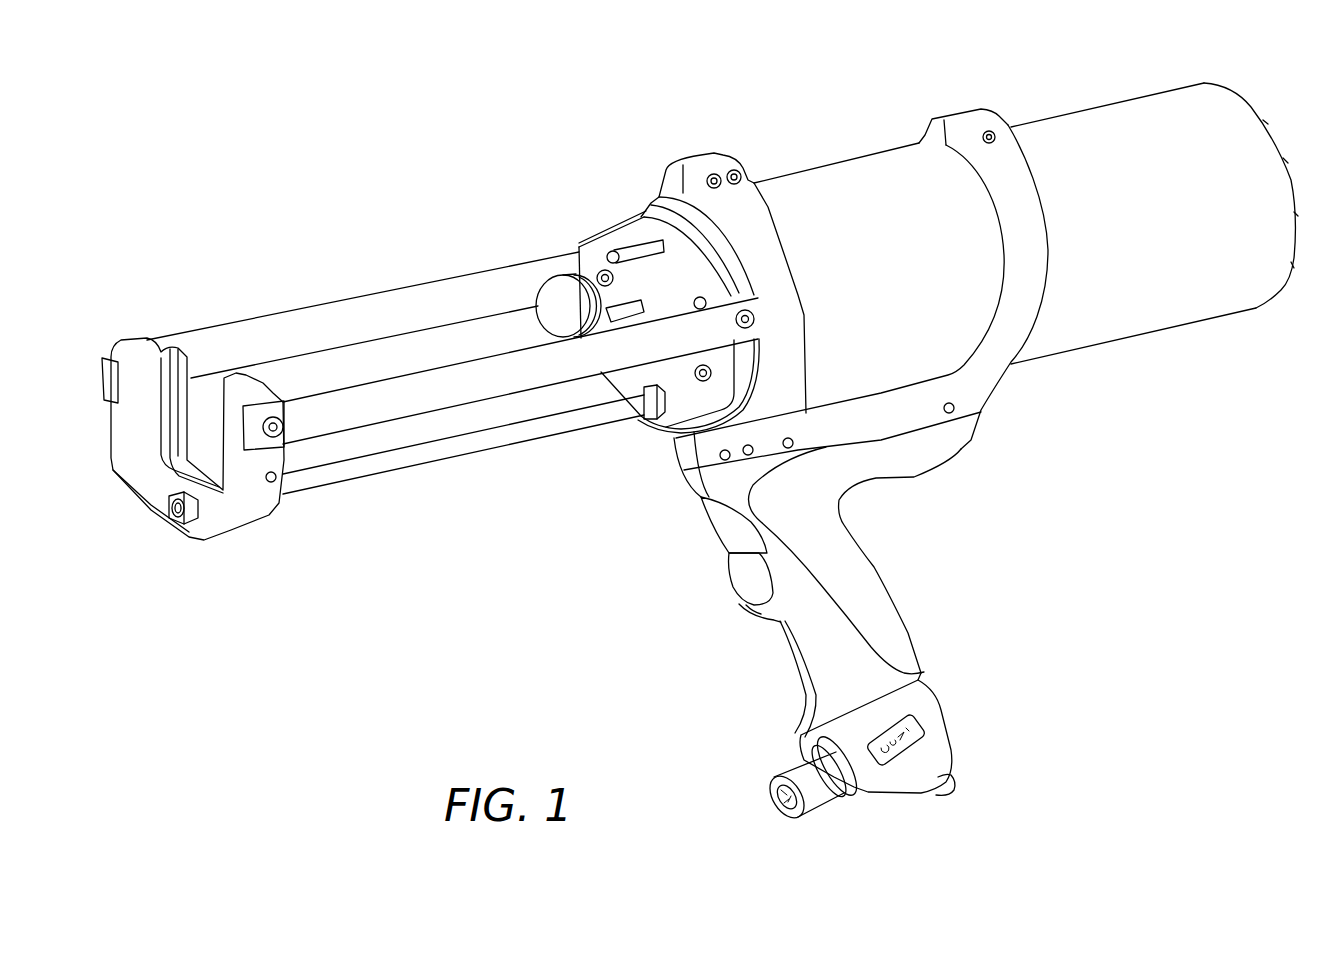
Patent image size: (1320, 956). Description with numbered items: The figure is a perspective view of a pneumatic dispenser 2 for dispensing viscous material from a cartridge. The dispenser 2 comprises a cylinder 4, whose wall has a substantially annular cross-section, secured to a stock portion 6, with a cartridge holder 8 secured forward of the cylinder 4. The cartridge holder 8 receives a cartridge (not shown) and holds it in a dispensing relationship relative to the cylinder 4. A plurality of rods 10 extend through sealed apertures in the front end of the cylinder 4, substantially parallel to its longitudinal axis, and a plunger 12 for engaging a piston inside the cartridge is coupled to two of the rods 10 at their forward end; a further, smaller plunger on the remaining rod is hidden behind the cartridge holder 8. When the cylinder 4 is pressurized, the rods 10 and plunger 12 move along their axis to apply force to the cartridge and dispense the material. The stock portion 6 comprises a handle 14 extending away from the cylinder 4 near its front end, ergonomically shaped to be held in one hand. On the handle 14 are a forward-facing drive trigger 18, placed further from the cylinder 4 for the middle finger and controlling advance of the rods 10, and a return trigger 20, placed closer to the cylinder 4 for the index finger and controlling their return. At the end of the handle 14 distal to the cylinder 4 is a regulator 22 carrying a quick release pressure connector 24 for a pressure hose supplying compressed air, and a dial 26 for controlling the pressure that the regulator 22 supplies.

The pneumatic dispenser 2 is at (700, 459).
The cylinder 4 is at (1152, 315).
The stock portion 6 is at (938, 459).
The cartridge holder 8 is at (282, 282).
The rods 10 is at (622, 310).
The plunger 12 is at (572, 321).
The handle 14 is at (868, 572).
The drive trigger 18 is at (740, 580).
The return trigger 20 is at (727, 530).
The regulator 22 is at (872, 736).
The quick release pressure connector 24 is at (950, 793).
The dial 26 is at (797, 767).